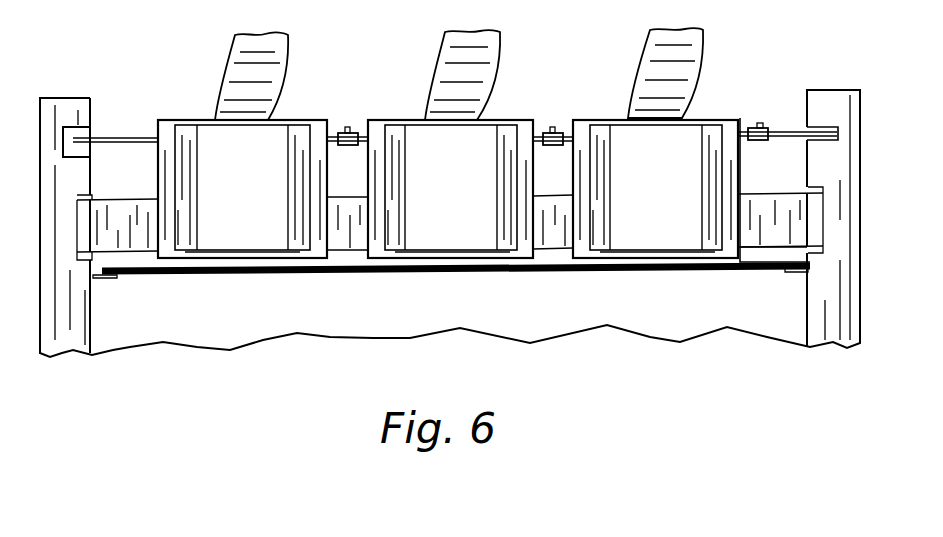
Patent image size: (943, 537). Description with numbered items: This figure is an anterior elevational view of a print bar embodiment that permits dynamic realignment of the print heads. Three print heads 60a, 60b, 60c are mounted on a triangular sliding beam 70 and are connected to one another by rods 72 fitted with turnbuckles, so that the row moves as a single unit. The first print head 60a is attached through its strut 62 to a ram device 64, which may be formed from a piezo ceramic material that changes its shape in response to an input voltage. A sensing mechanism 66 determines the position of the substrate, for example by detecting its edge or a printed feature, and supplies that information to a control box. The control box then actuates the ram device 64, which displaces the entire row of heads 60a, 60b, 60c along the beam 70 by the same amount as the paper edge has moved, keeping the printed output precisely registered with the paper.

The ram device 64 is at (73, 127).
The strut 62 is at (118, 136).
The first print head 60a is at (270, 152).
The print head 60b is at (483, 137).
The print head 60c is at (680, 148).
The rods with turnbuckles 72 is at (358, 128).
The sensing mechanism 66 is at (107, 278).
The triangular sliding beam 70 is at (775, 240).